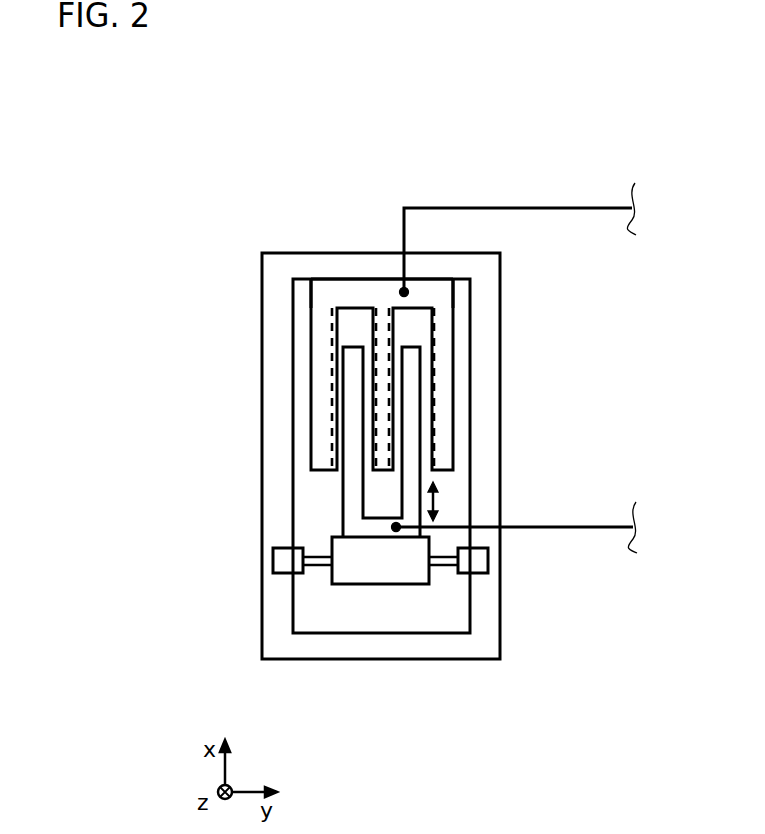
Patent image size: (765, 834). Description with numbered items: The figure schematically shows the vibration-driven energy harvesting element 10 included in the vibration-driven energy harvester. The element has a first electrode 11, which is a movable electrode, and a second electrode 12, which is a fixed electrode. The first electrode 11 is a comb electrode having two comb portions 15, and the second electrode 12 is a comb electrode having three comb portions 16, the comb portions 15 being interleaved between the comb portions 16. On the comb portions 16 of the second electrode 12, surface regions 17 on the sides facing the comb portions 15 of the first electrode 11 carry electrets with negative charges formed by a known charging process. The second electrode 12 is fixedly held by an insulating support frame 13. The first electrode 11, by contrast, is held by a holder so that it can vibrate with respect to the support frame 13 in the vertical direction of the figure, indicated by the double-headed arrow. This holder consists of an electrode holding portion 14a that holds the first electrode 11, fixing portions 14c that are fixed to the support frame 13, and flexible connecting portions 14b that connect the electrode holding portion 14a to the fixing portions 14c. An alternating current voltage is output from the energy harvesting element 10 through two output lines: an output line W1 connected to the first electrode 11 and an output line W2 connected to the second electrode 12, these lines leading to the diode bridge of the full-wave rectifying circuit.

The vibration-driven energy harvesting element 10 is at (220, 153).
The first electrode 11 is at (345, 522).
The second electrode 12 is at (368, 296).
The support frame 13 is at (274, 427).
The electrode holding portion 14a is at (381, 568).
The connecting portions 14b is at (317, 565).
The fixing portions 14c is at (278, 565).
The comb portions 15 is at (345, 483).
The comb portions 16 is at (322, 387).
The surface regions 17 is at (330, 332).
The output line W1 is at (555, 525).
The output line W2 is at (518, 207).